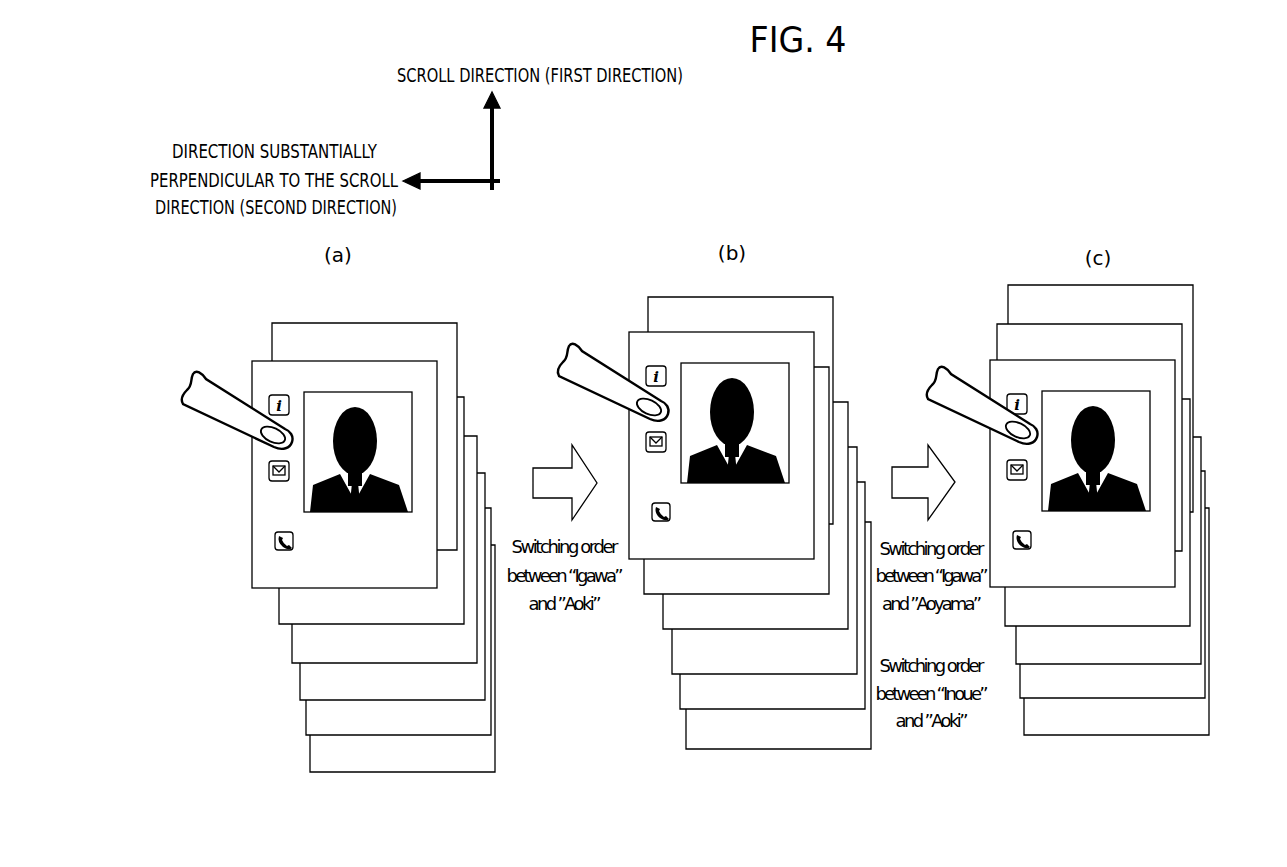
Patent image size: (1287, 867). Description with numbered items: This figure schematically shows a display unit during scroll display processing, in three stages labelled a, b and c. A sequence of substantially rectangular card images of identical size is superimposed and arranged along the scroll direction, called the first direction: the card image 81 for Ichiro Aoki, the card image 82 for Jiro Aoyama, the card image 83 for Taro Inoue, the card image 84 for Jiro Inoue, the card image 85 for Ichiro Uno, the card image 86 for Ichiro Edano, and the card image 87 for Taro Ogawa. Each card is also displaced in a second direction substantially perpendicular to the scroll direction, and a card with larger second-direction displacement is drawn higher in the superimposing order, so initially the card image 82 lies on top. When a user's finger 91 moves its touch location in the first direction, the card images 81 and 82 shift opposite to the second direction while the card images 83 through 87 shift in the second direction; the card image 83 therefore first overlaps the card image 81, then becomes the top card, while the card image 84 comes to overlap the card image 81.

The card image 81 is at (450, 347).
The card image 82 is at (430, 386).
The card image 83 is at (453, 597).
The card image 84 is at (463, 640).
The card image 85 is at (468, 682).
The card image 86 is at (473, 720).
The card image 87 is at (477, 758).
The finger 91 is at (217, 400).